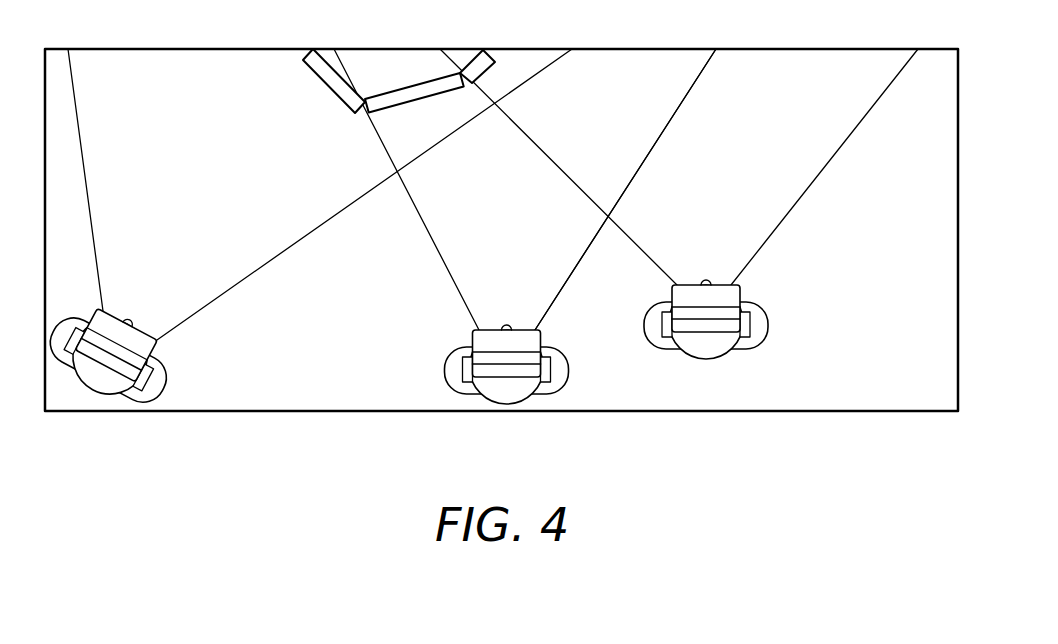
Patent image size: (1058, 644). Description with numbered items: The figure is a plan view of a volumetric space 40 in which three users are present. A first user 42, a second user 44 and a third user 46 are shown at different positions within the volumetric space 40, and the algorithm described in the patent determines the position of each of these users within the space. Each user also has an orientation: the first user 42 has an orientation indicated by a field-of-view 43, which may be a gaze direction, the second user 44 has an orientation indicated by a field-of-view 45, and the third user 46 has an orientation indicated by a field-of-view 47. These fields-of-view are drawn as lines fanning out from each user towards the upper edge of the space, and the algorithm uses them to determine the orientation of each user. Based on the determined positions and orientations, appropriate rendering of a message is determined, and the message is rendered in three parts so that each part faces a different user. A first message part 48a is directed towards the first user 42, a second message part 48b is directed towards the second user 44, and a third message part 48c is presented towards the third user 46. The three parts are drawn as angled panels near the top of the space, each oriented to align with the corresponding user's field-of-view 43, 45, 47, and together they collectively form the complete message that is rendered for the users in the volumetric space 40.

The volumetric space 40 is at (913, 437).
The first user 42 is at (157, 398).
The field-of-view 43 is at (290, 247).
The second user 44 is at (508, 404).
The field-of-view 45 is at (567, 280).
The third user 46 is at (706, 359).
The field-of-view 47 is at (825, 170).
The first message part 48a is at (323, 82).
The second message part 48b is at (392, 90).
The third message part 48c is at (471, 51).